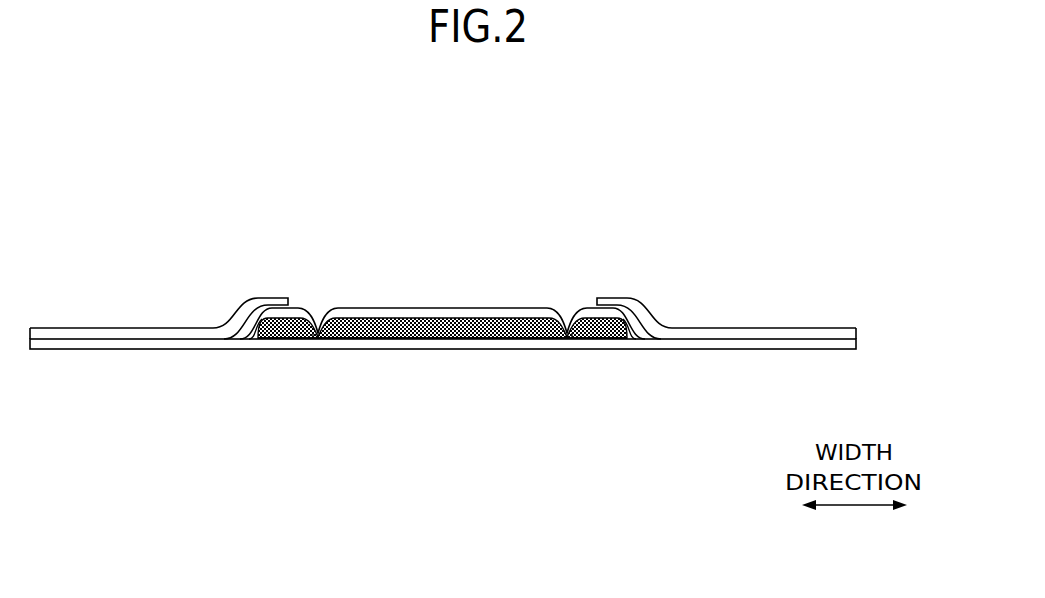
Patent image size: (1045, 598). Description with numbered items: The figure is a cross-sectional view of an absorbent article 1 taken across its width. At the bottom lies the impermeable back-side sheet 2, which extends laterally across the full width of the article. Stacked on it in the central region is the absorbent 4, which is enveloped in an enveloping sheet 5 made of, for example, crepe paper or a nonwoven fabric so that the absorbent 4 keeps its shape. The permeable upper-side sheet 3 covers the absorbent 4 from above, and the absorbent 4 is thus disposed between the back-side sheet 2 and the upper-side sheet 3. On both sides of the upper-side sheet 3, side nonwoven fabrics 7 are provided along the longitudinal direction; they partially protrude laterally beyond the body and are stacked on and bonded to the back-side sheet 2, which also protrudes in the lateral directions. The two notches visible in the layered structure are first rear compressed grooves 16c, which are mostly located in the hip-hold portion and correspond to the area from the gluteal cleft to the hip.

The absorbent article 1 is at (785, 160).
The back-side sheet 2 is at (613, 350).
The upper-side sheet 3 is at (444, 308).
The absorbent 4 is at (505, 328).
The enveloping sheet 5 is at (378, 340).
The side nonwoven fabric 7 is at (124, 328).
The first rear compressed groove 16c is at (311, 270).